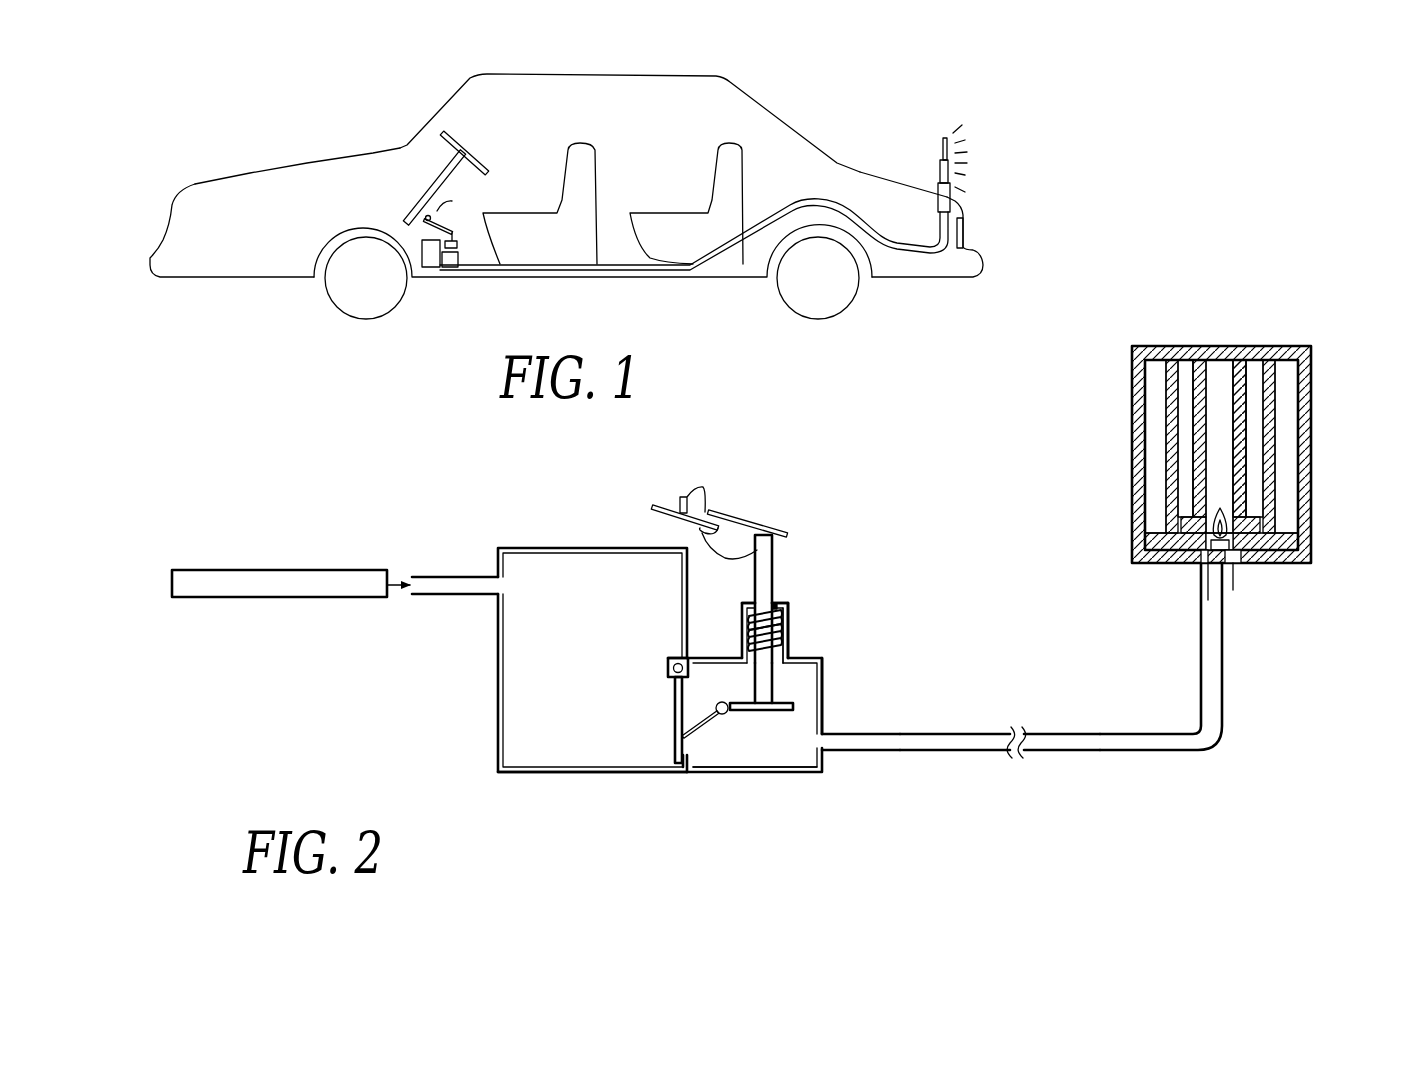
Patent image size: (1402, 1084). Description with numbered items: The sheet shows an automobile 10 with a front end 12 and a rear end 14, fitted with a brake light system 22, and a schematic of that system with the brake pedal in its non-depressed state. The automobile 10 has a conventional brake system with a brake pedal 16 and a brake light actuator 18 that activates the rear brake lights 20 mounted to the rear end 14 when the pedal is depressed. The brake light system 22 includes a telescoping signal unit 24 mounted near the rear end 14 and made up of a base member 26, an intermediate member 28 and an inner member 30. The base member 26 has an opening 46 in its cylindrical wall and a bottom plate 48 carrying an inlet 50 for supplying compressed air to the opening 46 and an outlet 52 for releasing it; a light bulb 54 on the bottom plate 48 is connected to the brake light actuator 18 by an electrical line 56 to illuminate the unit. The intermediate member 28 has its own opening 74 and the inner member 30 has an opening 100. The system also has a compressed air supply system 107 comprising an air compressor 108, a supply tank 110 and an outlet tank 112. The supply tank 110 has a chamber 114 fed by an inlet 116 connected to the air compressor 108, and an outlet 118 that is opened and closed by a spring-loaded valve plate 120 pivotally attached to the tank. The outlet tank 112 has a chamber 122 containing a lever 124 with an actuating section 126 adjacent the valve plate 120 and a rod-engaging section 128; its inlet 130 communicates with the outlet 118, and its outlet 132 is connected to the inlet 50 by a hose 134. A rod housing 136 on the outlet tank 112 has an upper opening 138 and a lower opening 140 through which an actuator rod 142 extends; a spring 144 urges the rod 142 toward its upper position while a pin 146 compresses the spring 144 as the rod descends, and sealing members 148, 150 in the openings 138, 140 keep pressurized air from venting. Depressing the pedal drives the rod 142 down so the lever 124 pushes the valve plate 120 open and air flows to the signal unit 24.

In FIG. 1, the automobile 10 is at (620, 43).
In FIG. 1, the front end 12 is at (265, 200).
In FIG. 1, the rear end 14 is at (857, 197).
In FIG. 1, the brake pedal 16 is at (460, 222).
In FIG. 2, the brake pedal 16 is at (735, 517).
In FIG. 1, the brake light actuator 18 is at (413, 203).
In FIG. 2, the brake light actuator 18 is at (678, 503).
In FIG. 1, the rear brake lights 20 is at (965, 230).
In FIG. 1, the brake light system 22 is at (910, 280).
In FIG. 2, the brake light system 22 is at (937, 843).
In FIG. 1, the telescoping signal unit 24 is at (960, 180).
In FIG. 2, the telescoping signal unit 24 is at (1223, 464).
In FIG. 2, the base member 26 is at (1318, 362).
In FIG. 2, the intermediate member 28 is at (1284, 455).
In FIG. 2, the inner member 30 is at (1250, 497).
In FIG. 2, the opening 46 is at (1152, 380).
In FIG. 2, the bottom plate 48 is at (1163, 557).
In FIG. 2, the inlet 50 is at (1203, 572).
In FIG. 2, the outlet 52 is at (1238, 565).
In FIG. 2, the light bulb 54 is at (1228, 568).
In FIG. 2, the electrical line 56 is at (1217, 742).
In FIG. 2, the opening 74 is at (1187, 447).
In FIG. 2, the opening 100 is at (1217, 482).
In FIG. 2, the compressed air supply system 107 is at (531, 774).
In FIG. 2, the air compressor 108 is at (220, 570).
In FIG. 1, the supply tank 110 is at (428, 268).
In FIG. 2, the supply tank 110 is at (496, 690).
In FIG. 1, the outlet tank 112 is at (447, 268).
In FIG. 2, the outlet tank 112 is at (783, 775).
In FIG. 2, the chamber 114 is at (557, 733).
In FIG. 2, the inlet 116 is at (474, 575).
In FIG. 2, the outlet 118 is at (685, 715).
In FIG. 2, the spring-loaded valve plate 120 is at (680, 727).
In FIG. 2, the chamber 122 is at (800, 680).
In FIG. 2, the lever 124 is at (740, 728).
In FIG. 2, the actuating section 126 is at (714, 722).
In FIG. 2, the rod-engaging section 128 is at (787, 710).
In FIG. 2, the inlet 130 is at (688, 660).
In FIG. 2, the outlet 132 is at (820, 742).
In FIG. 2, the hose 134 is at (937, 742).
In FIG. 2, the rod housing 136 is at (798, 640).
In FIG. 2, the upper opening 138 is at (776, 604).
In FIG. 2, the lower opening 140 is at (785, 687).
In FIG. 2, the actuator rod 142 is at (767, 552).
In FIG. 2, the spring 144 is at (795, 630).
In FIG. 2, the pin 146 is at (790, 622).
In FIG. 2, the sealing member 148 is at (750, 600).
In FIG. 2, the sealing member 150 is at (745, 660).